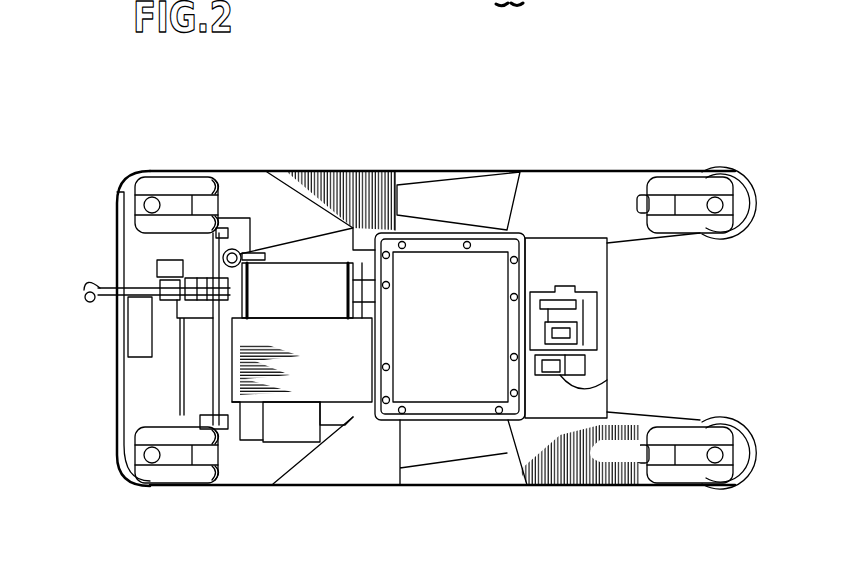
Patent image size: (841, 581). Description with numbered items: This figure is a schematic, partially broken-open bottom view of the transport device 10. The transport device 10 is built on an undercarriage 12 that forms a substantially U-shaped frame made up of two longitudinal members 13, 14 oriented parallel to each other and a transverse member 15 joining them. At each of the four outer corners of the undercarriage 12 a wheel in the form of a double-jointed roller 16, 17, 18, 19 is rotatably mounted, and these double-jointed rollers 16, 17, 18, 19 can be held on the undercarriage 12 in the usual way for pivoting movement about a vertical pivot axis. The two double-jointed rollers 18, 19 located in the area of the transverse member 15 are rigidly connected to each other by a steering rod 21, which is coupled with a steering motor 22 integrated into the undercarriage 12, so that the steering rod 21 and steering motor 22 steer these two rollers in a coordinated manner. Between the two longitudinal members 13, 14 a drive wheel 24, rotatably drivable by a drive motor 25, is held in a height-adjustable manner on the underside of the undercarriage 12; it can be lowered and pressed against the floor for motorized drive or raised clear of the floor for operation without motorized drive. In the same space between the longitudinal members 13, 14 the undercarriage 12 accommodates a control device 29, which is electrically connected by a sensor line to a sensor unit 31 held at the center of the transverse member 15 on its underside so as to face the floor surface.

The transport device 10 is at (556, 112).
The undercarriage 12 is at (471, 140).
The longitudinal member 13 is at (355, 170).
The longitudinal member 14 is at (370, 487).
The transverse member 15 is at (118, 358).
The double-jointed roller 16 is at (671, 183).
The double-jointed roller 17 is at (678, 468).
The double-jointed roller 18 is at (188, 185).
The double-jointed roller 19 is at (198, 472).
The steering rod 21 is at (185, 400).
The steering motor 22 is at (320, 297).
The drive wheel 24 is at (607, 325).
The drive motor 25 is at (607, 382).
The control device 29 is at (607, 266).
The sensor unit 31 is at (128, 318).